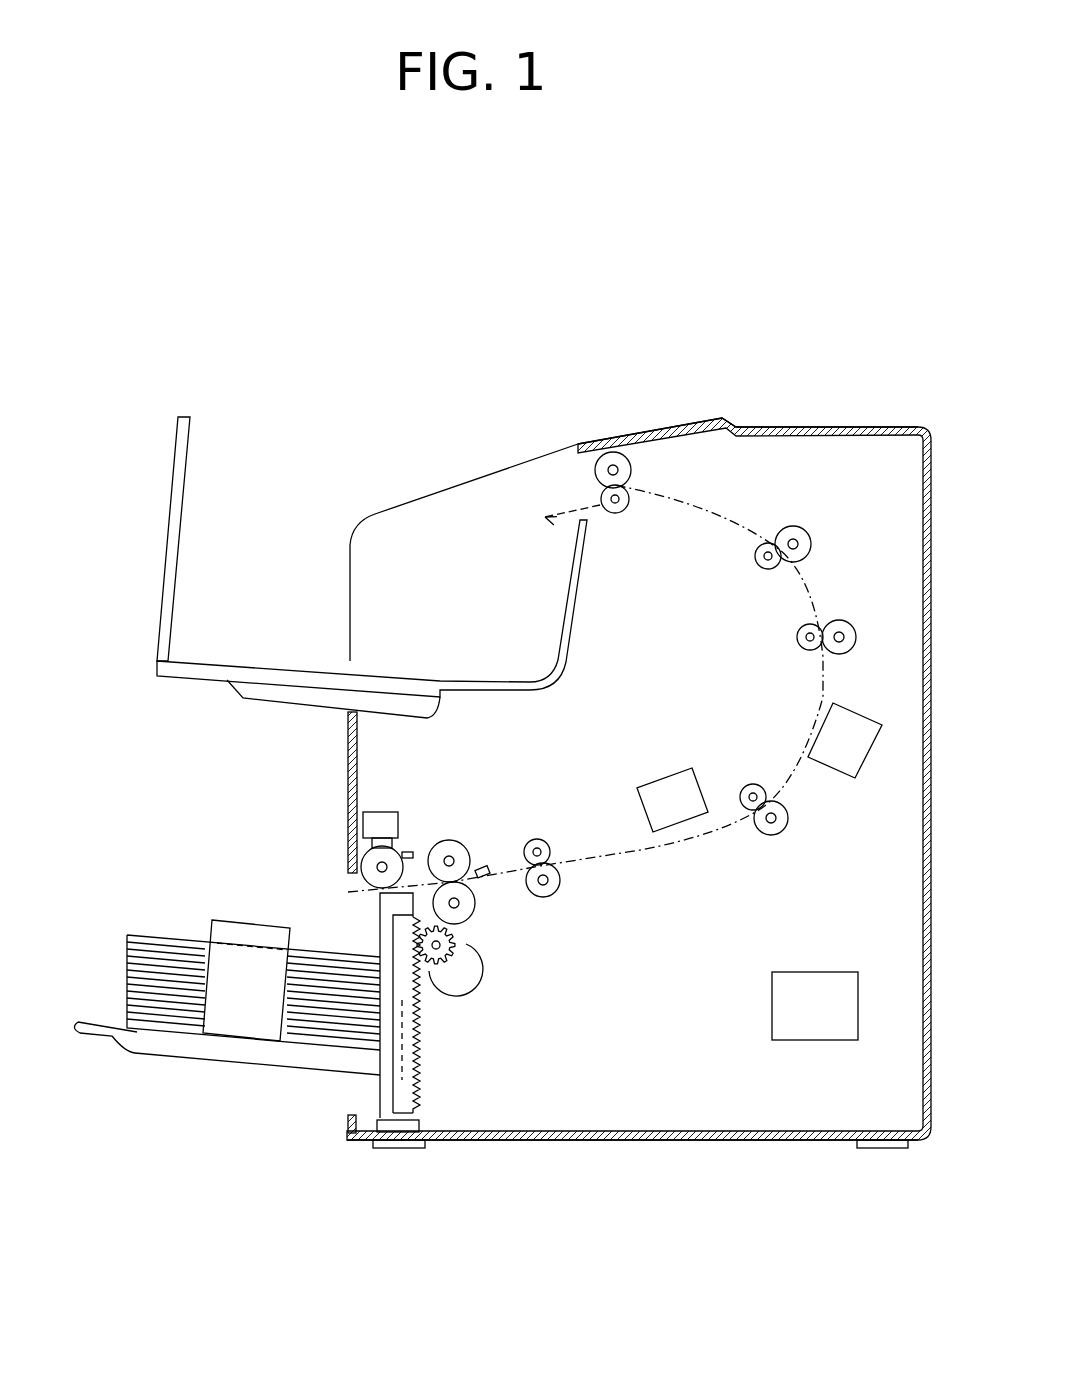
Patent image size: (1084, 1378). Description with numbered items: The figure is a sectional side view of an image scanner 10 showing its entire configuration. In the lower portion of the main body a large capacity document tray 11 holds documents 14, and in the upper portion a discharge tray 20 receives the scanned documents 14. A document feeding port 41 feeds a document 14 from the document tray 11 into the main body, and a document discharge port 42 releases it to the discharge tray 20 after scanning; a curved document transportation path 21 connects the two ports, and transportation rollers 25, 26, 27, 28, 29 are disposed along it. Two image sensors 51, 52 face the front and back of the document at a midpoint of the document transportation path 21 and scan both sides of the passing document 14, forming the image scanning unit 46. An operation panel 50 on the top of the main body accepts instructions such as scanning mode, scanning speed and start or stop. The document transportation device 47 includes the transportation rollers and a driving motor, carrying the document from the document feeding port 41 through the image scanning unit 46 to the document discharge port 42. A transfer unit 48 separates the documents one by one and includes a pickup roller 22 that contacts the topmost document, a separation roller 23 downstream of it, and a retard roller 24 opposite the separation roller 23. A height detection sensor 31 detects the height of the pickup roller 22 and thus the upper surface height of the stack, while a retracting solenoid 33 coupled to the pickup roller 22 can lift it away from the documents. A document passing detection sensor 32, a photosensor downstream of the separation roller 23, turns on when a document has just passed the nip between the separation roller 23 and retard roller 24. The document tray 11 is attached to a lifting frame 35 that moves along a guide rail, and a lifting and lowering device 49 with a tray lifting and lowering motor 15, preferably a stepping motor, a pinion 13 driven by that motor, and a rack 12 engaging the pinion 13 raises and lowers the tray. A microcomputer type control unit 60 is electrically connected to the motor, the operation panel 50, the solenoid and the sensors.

The image scanner 10 is at (788, 336).
The document tray 11 is at (139, 1076).
The rack 12 is at (418, 1090).
The pinion 13 is at (458, 960).
The document 14 is at (312, 1023).
The tray lifting and lowering motor 15 is at (457, 992).
The discharge tray 20 is at (262, 380).
The document transportation path 21 is at (730, 520).
The pickup roller 22 is at (367, 863).
The separation roller 23 is at (441, 843).
The retard roller 24 is at (472, 900).
The transportation roller 25 is at (561, 882).
The transportation roller 26 is at (785, 832).
The transportation roller 27 is at (858, 640).
The transportation roller 28 is at (811, 540).
The transportation roller 29 is at (632, 472).
The height detection sensor 31 is at (410, 850).
The document passing detection sensor 32 is at (488, 868).
The retracting solenoid 33 is at (372, 815).
The lifting frame 35 is at (352, 1133).
The document feeding port 41 is at (332, 886).
The document discharge port 42 is at (561, 475).
The image scanning unit 46 is at (691, 672).
The document transportation device 47 is at (712, 1122).
The transfer unit 48 is at (325, 805).
The lifting and lowering device 49 is at (609, 1025).
The operation panel 50 is at (650, 427).
The image sensor 51 is at (660, 795).
The image sensor 52 is at (860, 755).
The control unit 60 is at (817, 1020).